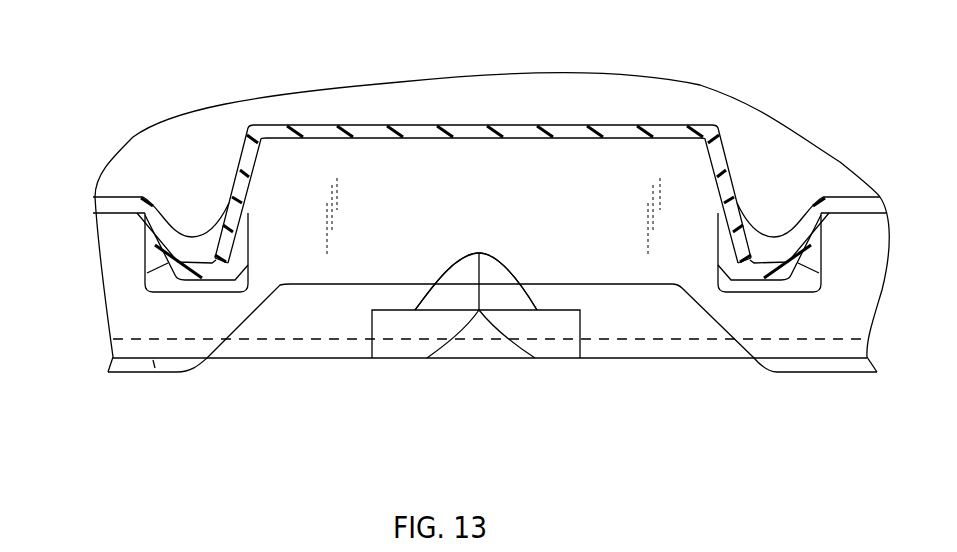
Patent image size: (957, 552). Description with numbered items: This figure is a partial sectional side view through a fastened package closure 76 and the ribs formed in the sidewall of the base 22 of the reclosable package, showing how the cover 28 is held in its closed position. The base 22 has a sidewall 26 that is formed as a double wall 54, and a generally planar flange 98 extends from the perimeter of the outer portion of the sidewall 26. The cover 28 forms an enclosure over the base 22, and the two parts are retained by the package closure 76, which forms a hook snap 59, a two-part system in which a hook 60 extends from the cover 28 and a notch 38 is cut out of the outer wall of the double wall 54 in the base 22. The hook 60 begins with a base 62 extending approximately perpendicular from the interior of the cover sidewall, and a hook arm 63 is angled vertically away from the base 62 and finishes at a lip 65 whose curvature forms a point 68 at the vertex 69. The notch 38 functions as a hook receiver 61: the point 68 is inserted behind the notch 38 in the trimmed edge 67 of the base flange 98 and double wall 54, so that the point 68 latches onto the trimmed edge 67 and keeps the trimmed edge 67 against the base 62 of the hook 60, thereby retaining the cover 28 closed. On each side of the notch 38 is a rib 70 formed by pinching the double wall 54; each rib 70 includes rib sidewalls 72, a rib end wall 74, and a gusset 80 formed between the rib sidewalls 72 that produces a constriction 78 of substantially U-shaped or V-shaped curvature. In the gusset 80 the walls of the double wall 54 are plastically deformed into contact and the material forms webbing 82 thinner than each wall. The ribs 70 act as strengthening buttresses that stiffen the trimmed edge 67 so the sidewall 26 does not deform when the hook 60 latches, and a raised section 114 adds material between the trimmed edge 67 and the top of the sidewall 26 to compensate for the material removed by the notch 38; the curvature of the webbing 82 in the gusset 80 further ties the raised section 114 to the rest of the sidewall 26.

The base 22 is at (692, 322).
The sidewall 26 is at (107, 227).
The cover 28 is at (398, 100).
The notch 38 is at (633, 315).
The double wall 54 is at (275, 125).
The hook snap 59 is at (490, 376).
The hook 60 is at (521, 253).
The hook receiver 61 is at (342, 284).
The base 62 is at (400, 338).
The hook arm 63 is at (540, 335).
The lip 65 is at (445, 293).
The trimmed edge 67 is at (250, 318).
The point 68 is at (479, 253).
The vertex 69 is at (491, 262).
The rib 70 is at (144, 175).
The rib sidewall 72 is at (250, 250).
The rib end wall 74 is at (197, 296).
The flow direction 76 is at (402, 423).
The constriction 78 is at (205, 256).
The gusset 80 is at (160, 225).
The webbing 82 is at (208, 232).
The flange 98 is at (132, 363).
The raised section 114 is at (520, 132).